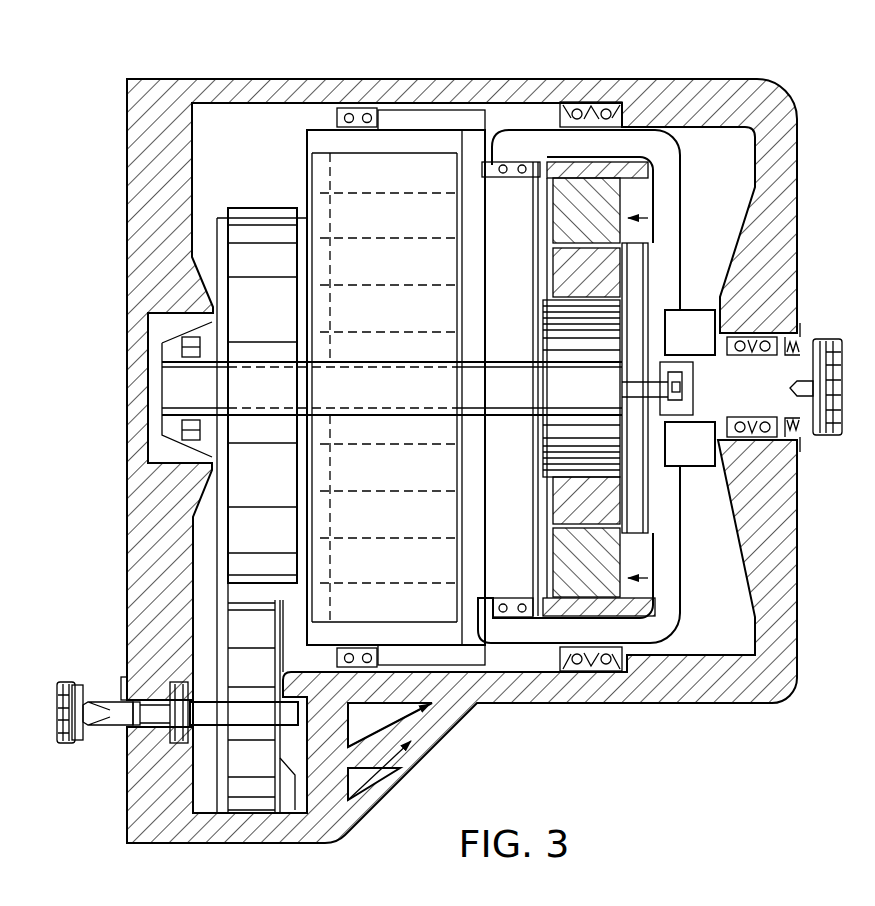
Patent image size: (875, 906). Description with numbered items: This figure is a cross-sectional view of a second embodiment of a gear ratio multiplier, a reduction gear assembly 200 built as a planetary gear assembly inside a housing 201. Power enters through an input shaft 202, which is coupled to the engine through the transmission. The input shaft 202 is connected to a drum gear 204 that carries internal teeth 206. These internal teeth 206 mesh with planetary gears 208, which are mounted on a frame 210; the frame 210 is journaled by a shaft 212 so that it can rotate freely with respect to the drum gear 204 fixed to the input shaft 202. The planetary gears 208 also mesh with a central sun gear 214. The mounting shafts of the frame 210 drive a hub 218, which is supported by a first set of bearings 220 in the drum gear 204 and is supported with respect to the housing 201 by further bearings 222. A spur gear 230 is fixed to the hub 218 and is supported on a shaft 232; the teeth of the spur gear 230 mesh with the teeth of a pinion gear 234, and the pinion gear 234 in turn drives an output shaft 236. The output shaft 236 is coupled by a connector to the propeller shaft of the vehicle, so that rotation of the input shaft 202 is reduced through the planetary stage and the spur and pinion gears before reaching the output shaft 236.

The reduction gear assembly 200 is at (786, 78).
The housing 201 is at (697, 88).
The input shaft 202 is at (745, 403).
The drum gear 204 is at (685, 200).
The internal teeth 206 is at (555, 173).
The planetary gears 208 is at (553, 264).
The frame 210 is at (637, 296).
The shaft 212 is at (695, 387).
The sun gear 214 is at (555, 378).
The hub 218 is at (532, 230).
The first set of bearings 220 is at (482, 165).
The bearings 222 is at (335, 115).
The spur gear 230 is at (258, 228).
The shaft 232 is at (172, 401).
The pinion gear 234 is at (287, 618).
The output shaft 236 is at (93, 712).